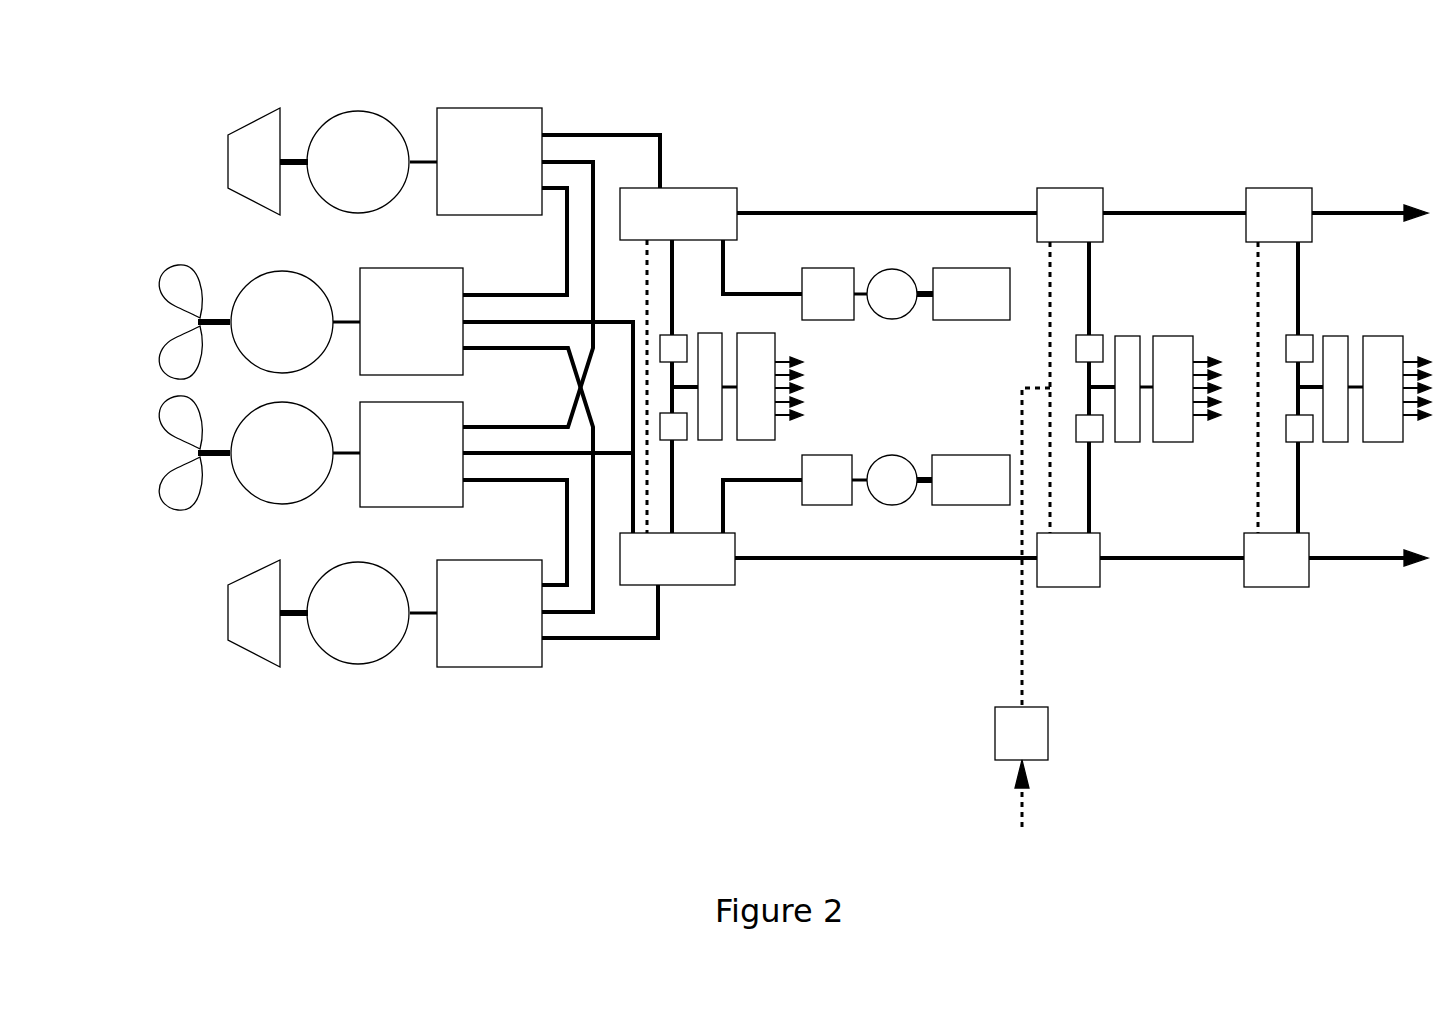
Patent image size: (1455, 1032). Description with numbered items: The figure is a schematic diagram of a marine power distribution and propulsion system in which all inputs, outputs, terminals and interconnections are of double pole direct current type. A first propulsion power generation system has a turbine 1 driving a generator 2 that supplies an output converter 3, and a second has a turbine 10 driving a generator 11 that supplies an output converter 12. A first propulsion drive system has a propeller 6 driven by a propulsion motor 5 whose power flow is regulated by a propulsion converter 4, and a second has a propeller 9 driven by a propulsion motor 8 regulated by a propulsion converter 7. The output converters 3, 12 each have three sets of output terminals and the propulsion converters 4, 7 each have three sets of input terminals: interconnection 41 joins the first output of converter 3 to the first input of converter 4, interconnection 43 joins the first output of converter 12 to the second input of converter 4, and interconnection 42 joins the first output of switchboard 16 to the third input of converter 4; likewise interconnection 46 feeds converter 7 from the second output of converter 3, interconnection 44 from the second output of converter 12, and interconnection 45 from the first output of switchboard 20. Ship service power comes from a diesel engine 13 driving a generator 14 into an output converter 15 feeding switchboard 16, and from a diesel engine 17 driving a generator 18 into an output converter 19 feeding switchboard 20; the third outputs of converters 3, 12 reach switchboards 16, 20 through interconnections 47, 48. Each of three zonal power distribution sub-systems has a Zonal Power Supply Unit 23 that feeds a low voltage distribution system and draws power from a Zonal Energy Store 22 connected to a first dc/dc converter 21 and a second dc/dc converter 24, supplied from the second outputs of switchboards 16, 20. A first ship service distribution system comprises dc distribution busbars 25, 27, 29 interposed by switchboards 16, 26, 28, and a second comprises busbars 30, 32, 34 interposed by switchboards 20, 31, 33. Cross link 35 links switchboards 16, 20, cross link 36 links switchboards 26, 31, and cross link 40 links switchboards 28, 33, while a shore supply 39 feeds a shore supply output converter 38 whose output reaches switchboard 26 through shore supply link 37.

The turbine 1 is at (257, 117).
The generator 2 is at (362, 110).
The output converter 3 is at (464, 108).
The propulsion converter 4 is at (383, 268).
The propulsion motor 5 is at (250, 278).
The propeller 6 is at (198, 318).
The propulsion converter 7 is at (383, 507).
The propulsion motor 8 is at (245, 495).
The propeller 9 is at (190, 466).
The turbine 10 is at (253, 652).
The generator 11 is at (348, 668).
The output converter 12 is at (475, 668).
The diesel engine 13 is at (970, 268).
The generator 14 is at (892, 268).
The output converter 15 is at (827, 268).
The switchboard 16 is at (685, 188).
The diesel engine 17 is at (958, 505).
The generator 18 is at (882, 505).
The output converter 19 is at (818, 505).
The switchboard 20 is at (685, 585).
The first dc/dc converter 21 is at (683, 335).
The Zonal Energy Store 22 is at (707, 333).
The Zonal Power Supply Unit 23 is at (750, 333).
The second dc/dc converter 24 is at (685, 440).
The dc distribution busbar 25 is at (997, 213).
The switchboard 26 is at (1077, 188).
The dc distribution busbar 27 is at (1152, 213).
The switchboard 28 is at (1272, 188).
The dc distribution busbar 29 is at (1350, 213).
The dc distribution busbar 30 is at (998, 560).
The switchboard 31 is at (1072, 587).
The dc distribution busbar 32 is at (1152, 560).
The switchboard 33 is at (1245, 587).
The dc distribution busbar 34 is at (1328, 560).
The cross link 35 is at (647, 398).
The cross link 36 is at (1045, 350).
The shore supply link 37 is at (1022, 680).
The shore supply output converter 38 is at (995, 735).
The shore supply 39 is at (1030, 790).
The cross link 40 is at (1258, 483).
The interconnection 41 is at (490, 292).
The interconnection 42 is at (515, 318).
The interconnection 43 is at (528, 346).
The interconnection 44 is at (490, 482).
The interconnection 45 is at (515, 482).
The interconnection 46 is at (530, 430).
The interconnection 47 is at (568, 135).
The interconnection 48 is at (570, 640).